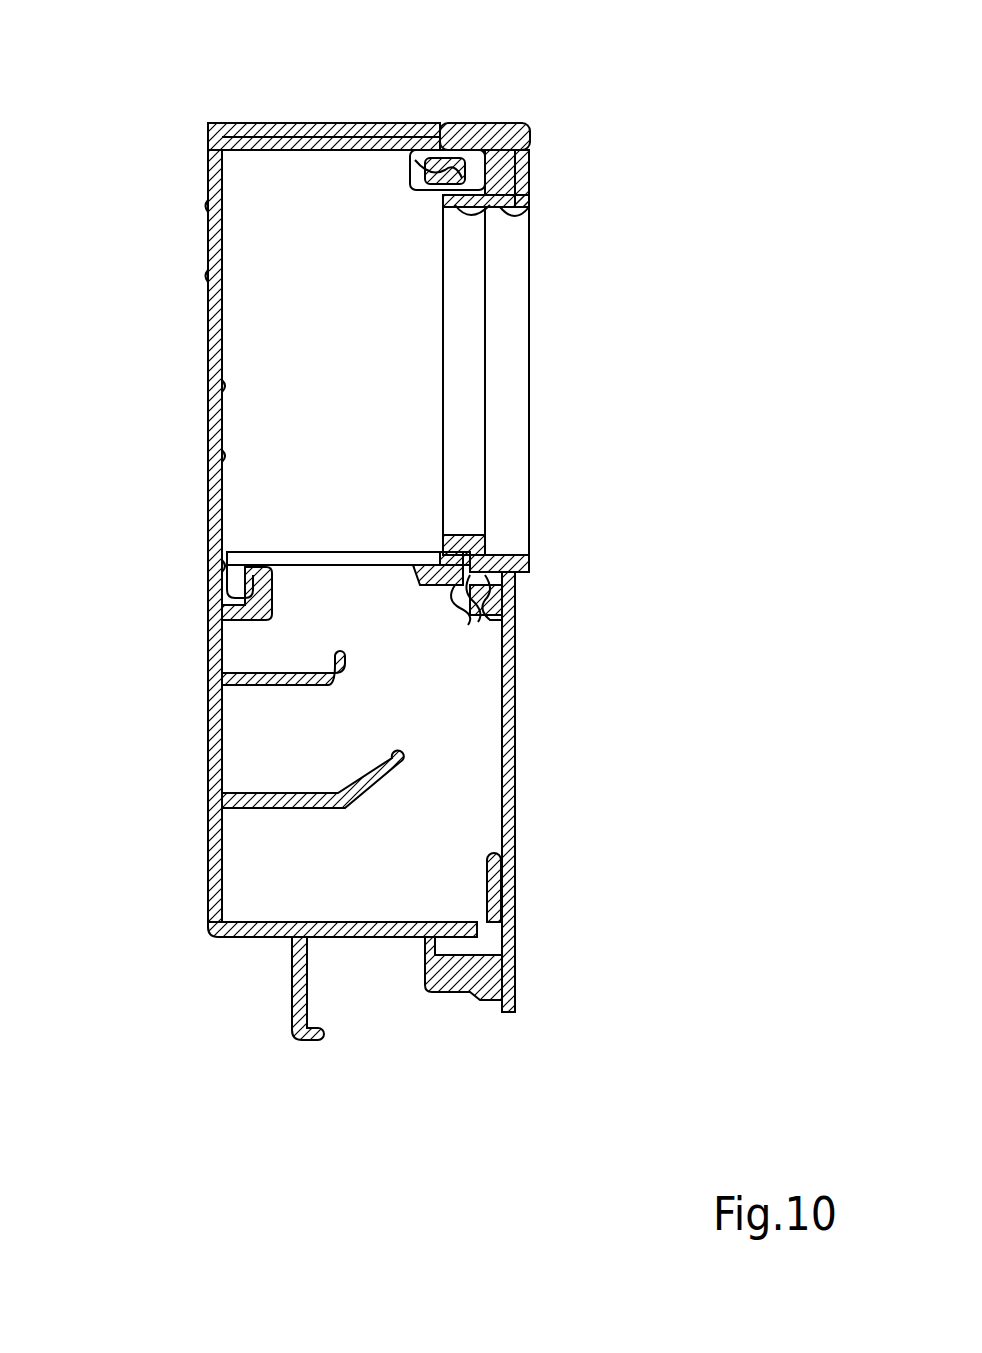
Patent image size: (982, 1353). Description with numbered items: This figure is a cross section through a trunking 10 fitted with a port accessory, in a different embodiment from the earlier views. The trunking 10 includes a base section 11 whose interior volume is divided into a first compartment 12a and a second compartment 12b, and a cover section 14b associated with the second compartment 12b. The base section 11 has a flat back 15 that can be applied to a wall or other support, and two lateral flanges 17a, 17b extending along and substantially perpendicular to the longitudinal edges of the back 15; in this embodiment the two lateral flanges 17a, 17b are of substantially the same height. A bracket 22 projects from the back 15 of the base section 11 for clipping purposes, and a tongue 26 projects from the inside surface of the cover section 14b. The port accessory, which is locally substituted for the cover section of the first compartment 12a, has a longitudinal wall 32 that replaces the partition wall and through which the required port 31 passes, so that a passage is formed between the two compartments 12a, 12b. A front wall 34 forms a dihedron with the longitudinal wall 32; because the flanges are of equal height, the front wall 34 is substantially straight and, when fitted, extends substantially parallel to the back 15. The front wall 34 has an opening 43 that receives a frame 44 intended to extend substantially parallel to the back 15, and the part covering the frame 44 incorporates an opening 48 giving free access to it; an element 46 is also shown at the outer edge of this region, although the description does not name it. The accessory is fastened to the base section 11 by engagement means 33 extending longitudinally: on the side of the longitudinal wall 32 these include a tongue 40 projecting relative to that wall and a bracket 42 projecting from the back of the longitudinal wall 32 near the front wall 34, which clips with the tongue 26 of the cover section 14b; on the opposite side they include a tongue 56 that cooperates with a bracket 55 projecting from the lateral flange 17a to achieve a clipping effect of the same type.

The trunking 10 is at (156, 1010).
The base section 11 is at (201, 892).
The first compartment 12a is at (266, 352).
The second compartment 12b is at (243, 718).
The cover section 14b is at (519, 755).
The back 15 is at (208, 462).
The lateral flange 17a is at (298, 120).
The lateral flange 17b is at (386, 940).
The bracket 22 is at (272, 598).
The tongue 26 is at (505, 625).
The port 31 is at (405, 582).
The longitudinal wall 32 is at (310, 548).
The engagement means 33 is at (428, 120).
The front wall 34 is at (517, 540).
The tongue 40 is at (228, 575).
The bracket 42 is at (450, 622).
The opening 43 is at (457, 210).
The frame 44 is at (489, 265).
The frame member 46 is at (532, 122).
The opening 48 is at (513, 210).
The bracket 55 is at (412, 183).
The tongue 56 is at (452, 148).